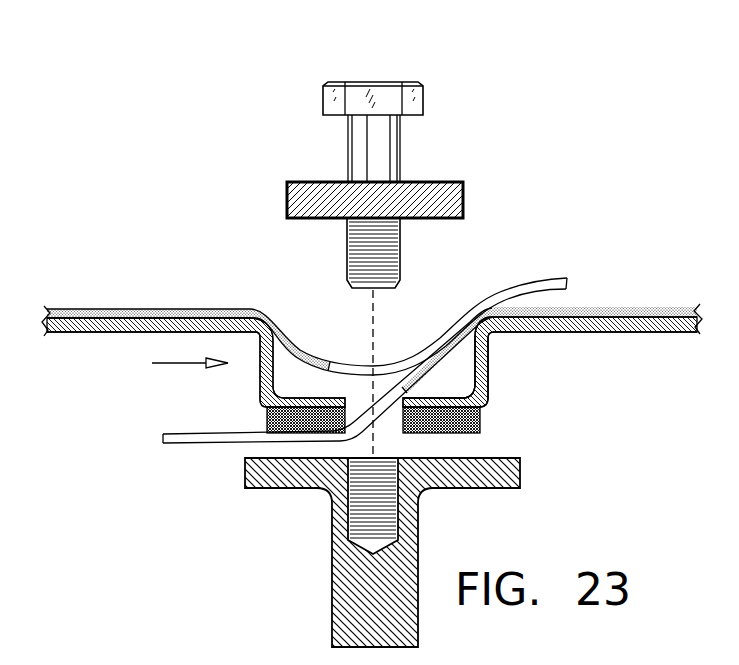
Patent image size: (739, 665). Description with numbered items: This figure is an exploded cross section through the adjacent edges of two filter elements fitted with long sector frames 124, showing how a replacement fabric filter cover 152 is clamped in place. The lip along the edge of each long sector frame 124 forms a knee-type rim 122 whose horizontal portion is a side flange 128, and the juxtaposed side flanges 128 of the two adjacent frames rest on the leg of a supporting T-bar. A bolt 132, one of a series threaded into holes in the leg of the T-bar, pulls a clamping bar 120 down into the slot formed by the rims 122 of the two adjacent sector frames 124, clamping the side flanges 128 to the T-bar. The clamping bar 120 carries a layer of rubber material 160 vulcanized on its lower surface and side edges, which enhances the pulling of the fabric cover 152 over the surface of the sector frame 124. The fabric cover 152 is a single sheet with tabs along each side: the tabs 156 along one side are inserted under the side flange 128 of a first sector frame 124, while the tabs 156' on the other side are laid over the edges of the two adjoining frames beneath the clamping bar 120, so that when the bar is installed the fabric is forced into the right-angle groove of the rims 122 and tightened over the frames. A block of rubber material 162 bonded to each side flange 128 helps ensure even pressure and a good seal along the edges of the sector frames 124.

The bolt 132 is at (395, 81).
The clamping bar 120 is at (433, 182).
The layer of rubber material 160 is at (310, 226).
The fabric filter cover 152 is at (147, 307).
The long sector frame 124 is at (92, 334).
The knee-type rim 122 is at (163, 365).
The tab 156 is at (227, 418).
The tab 156' is at (445, 321).
The side flange 128 is at (484, 371).
The block of rubber material 162 is at (484, 421).